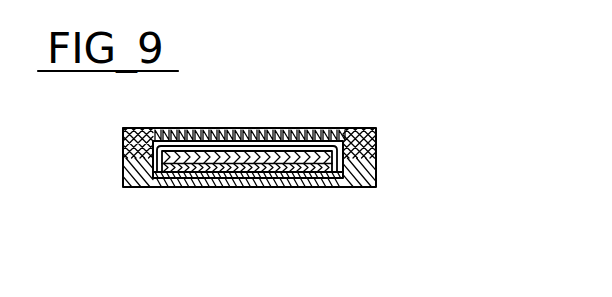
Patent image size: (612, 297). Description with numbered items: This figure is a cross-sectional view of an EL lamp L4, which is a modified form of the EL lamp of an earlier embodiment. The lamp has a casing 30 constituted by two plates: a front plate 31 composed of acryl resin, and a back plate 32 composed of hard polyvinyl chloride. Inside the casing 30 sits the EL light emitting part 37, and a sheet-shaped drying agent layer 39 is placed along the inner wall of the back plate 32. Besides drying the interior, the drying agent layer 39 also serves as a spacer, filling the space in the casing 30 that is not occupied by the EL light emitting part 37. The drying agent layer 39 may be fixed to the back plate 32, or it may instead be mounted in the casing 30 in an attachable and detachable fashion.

The EL lamp L4 is at (340, 127).
The casing 30 is at (502, 125).
The front plate 31 is at (376, 130).
The back plate 32 is at (377, 178).
The EL light emitting part 37 is at (263, 146).
The drying agent layer 39 is at (229, 173).